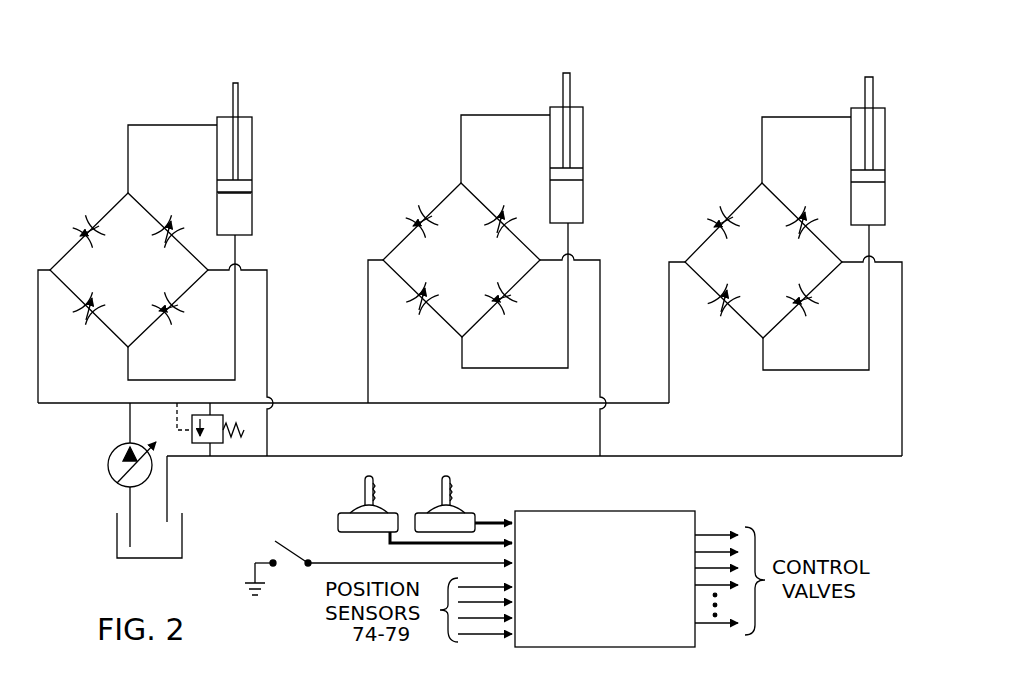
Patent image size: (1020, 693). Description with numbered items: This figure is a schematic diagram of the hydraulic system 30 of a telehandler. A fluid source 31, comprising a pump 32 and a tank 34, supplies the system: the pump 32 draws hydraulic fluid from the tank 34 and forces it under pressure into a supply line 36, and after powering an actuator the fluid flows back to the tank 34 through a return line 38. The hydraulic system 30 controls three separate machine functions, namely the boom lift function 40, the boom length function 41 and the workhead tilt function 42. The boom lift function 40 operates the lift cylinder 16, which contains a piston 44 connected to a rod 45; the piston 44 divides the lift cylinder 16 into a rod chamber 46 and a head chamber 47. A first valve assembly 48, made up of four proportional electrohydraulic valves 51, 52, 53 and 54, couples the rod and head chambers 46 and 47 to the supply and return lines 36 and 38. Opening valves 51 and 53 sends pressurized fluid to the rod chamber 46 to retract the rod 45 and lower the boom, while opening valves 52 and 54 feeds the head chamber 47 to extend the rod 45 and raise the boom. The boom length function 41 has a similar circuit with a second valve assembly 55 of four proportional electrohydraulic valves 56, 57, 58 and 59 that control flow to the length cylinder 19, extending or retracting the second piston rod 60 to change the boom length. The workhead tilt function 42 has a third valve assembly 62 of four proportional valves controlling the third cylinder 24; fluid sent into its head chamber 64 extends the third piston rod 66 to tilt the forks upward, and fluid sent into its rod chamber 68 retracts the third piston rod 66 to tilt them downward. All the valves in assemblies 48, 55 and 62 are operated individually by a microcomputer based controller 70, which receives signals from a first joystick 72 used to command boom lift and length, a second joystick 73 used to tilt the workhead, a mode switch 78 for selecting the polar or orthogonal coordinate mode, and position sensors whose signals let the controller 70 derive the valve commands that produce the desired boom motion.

The hydraulic system 30 is at (95, 131).
The lift cylinder 16 is at (252, 222).
The length cylinder 19 is at (584, 210).
The third cylinder 24 is at (885, 210).
The fluid source 31 is at (99, 451).
The pump 32 is at (112, 478).
The tank 34 is at (117, 535).
The supply line 36 is at (352, 403).
The return line 38 is at (358, 456).
The boom lift function 40 is at (185, 97).
The boom length function 41 is at (476, 99).
The workhead tilt function 42 is at (806, 101).
The piston 44 is at (244, 183).
The rod 45 is at (240, 100).
The rod chamber 46 is at (224, 165).
The head chamber 47 is at (223, 206).
The first valve assembly 48 is at (110, 194).
The proportional electrohydraulic valve 51 is at (80, 222).
The proportional electrohydraulic valve 52 is at (160, 242).
The proportional electrohydraulic valve 53 is at (182, 322).
The proportional electrohydraulic valve 54 is at (80, 322).
The second valve assembly 55 is at (438, 188).
The proportional electrohydraulic valve 56 is at (420, 213).
The proportional electrohydraulic valve 57 is at (492, 233).
The proportional electrohydraulic valve 58 is at (505, 312).
The proportional electrohydraulic valve 59 is at (415, 308).
The second piston rod 60 is at (573, 100).
The third valve assembly 62 is at (731, 195).
The head chamber 64 is at (860, 197).
The third piston rod 66 is at (874, 102).
The rod chamber 68 is at (860, 155).
The controller 70 is at (592, 602).
The first joystick 72 is at (468, 519).
The second joystick 73 is at (393, 519).
The mode switch 78 is at (283, 547).